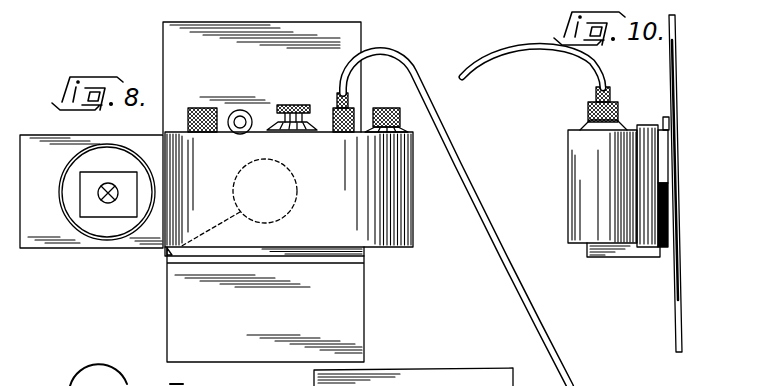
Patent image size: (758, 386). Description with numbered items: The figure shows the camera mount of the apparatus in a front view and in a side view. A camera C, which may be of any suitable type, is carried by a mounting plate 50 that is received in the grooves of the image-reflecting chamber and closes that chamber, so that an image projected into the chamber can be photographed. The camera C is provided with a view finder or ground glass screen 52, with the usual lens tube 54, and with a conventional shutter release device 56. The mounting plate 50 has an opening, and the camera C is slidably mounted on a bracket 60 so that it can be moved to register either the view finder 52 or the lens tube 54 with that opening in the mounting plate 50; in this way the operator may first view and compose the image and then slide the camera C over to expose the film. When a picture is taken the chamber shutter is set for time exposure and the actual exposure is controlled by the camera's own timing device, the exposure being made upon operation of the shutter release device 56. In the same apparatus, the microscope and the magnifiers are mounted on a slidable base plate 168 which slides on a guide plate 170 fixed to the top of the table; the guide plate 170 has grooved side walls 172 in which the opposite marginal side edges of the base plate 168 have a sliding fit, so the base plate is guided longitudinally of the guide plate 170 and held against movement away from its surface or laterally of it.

In FIG. 8, the mounting plate 50 is at (167, 45).
In FIG. 10, the mounting plate 50 is at (674, 92).
In FIG. 8, the view finder 52 is at (103, 242).
In FIG. 8, the lens tube 54 is at (165, 254).
In FIG. 8, the shutter release device 56 is at (553, 360).
In FIG. 10, the shutter release device 56 is at (496, 46).
In FIG. 8, the bracket 60 is at (320, 265).
In FIG. 10, the bracket 60 is at (608, 258).
In FIG. 8, the camera C is at (395, 188).
In FIG. 10, the camera C is at (565, 166).
In FIG. 8, the slidable base plate 168 is at (457, 0).
In FIG. 8, the guide plate 170 is at (405, 0).
In FIG. 8, the grooved side walls 172 is at (335, 2).